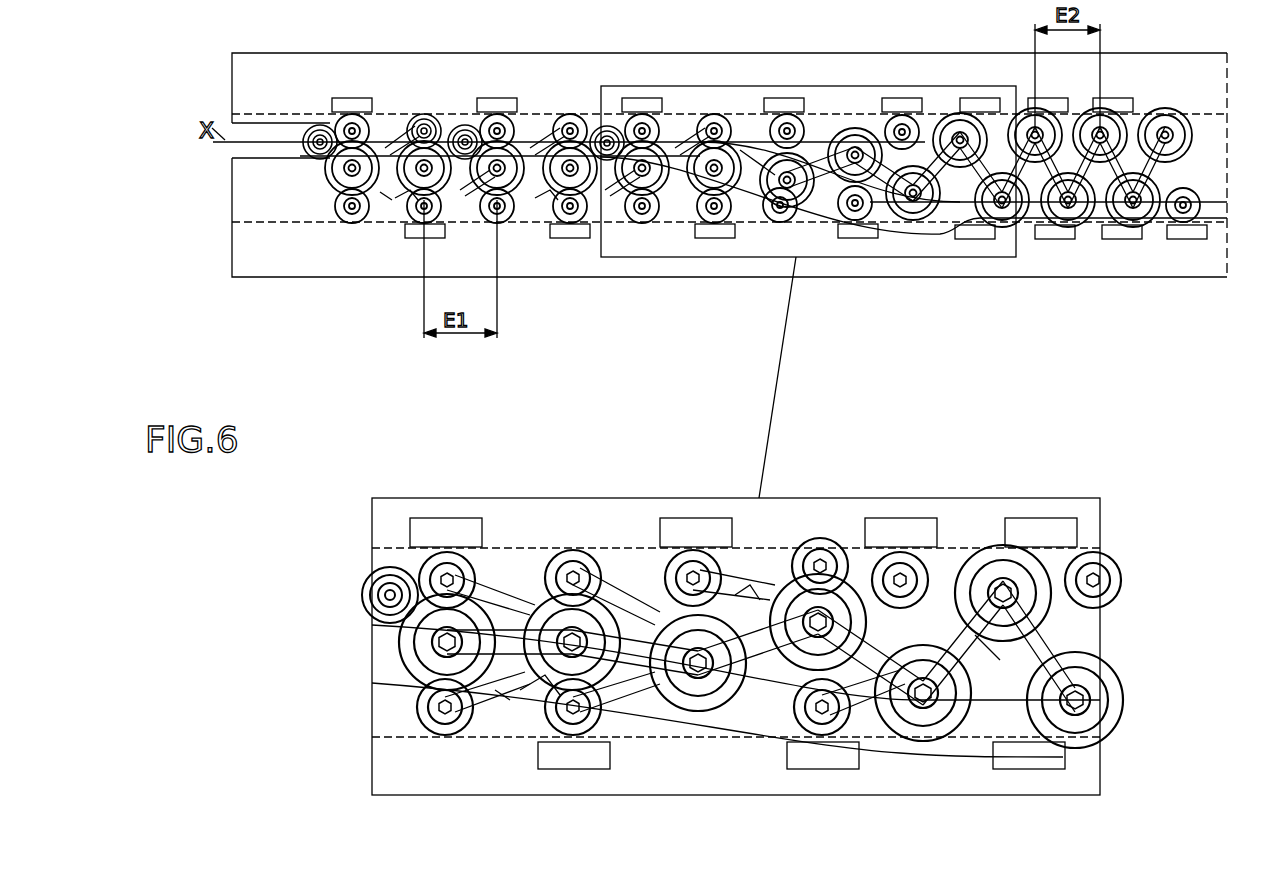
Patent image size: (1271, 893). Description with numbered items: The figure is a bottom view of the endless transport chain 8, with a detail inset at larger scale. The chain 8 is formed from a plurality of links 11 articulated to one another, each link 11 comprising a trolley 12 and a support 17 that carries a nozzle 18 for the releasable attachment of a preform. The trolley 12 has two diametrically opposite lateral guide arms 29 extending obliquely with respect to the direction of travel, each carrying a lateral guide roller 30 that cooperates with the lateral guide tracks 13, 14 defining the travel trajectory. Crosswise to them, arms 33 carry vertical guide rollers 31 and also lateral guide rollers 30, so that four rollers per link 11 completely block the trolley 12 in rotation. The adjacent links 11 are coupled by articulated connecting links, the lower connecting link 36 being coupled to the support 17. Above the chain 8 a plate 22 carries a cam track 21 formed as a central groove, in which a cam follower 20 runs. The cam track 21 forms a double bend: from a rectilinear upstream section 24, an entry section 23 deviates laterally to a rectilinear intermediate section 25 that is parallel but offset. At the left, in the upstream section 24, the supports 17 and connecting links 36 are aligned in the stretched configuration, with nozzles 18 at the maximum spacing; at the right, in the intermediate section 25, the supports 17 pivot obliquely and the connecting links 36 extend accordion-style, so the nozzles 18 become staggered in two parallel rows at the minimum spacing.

The endless transport chain 8 is at (1182, 163).
The link 11 is at (383, 105).
The trolley 12 is at (383, 199).
The lateral guide track 13 is at (250, 222).
The lateral guide track 14 is at (247, 113).
The support 17 is at (806, 154).
The nozzle 18 is at (342, 173).
The cam follower 20 is at (307, 148).
The cam track 21 is at (692, 400).
The entry section 23 is at (815, 216).
The rectilinear upstream section 24 is at (265, 121).
The rectilinear intermediate section 25 is at (1089, 242).
The plate 22 is at (278, 65).
The lateral guide arm 29 is at (388, 147).
The lateral guide roller 30 is at (350, 125).
The vertical guide roller 31 is at (332, 105).
The arm 33 is at (403, 200).
The lower connecting link 36 is at (758, 162).